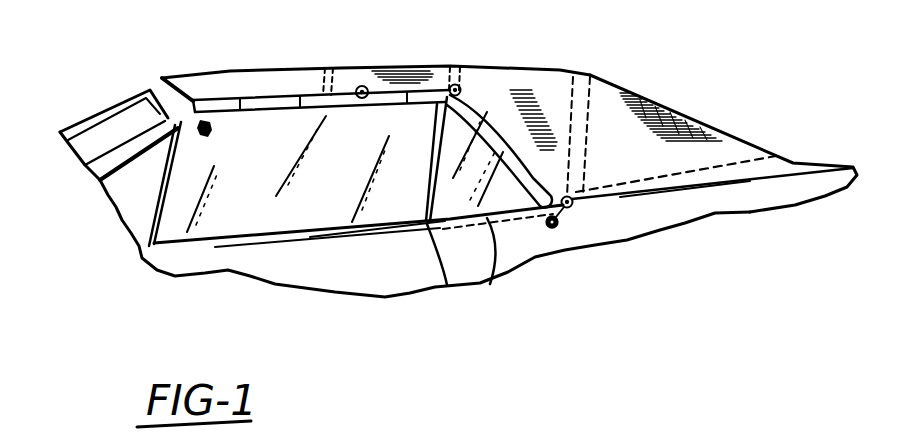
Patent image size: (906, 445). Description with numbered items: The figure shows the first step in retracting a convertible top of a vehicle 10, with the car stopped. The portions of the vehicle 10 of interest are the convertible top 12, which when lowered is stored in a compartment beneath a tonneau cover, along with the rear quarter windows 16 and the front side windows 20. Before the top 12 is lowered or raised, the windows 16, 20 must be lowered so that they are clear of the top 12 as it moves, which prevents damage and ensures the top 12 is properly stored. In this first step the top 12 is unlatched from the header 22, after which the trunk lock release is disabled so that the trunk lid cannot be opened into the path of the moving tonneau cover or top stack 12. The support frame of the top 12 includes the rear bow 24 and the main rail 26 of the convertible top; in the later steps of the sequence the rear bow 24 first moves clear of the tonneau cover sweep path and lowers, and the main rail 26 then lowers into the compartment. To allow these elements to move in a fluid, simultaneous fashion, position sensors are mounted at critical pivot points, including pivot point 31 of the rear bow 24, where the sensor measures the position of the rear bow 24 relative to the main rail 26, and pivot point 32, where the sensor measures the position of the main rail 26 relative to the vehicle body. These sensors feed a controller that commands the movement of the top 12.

The vehicle 10 is at (158, 284).
The convertible top 12 is at (170, 70).
The rear quarter windows 16 is at (491, 283).
The front side windows 20 is at (315, 233).
The header 22 is at (150, 92).
The rear bow 24 is at (657, 193).
The main rail 26 is at (507, 137).
The pivot point 31 is at (572, 206).
The pivot point 32 is at (555, 228).